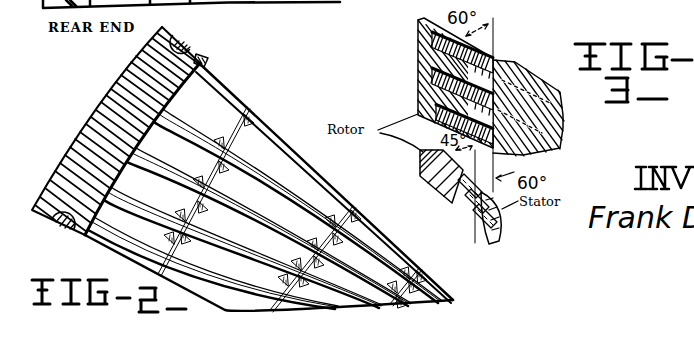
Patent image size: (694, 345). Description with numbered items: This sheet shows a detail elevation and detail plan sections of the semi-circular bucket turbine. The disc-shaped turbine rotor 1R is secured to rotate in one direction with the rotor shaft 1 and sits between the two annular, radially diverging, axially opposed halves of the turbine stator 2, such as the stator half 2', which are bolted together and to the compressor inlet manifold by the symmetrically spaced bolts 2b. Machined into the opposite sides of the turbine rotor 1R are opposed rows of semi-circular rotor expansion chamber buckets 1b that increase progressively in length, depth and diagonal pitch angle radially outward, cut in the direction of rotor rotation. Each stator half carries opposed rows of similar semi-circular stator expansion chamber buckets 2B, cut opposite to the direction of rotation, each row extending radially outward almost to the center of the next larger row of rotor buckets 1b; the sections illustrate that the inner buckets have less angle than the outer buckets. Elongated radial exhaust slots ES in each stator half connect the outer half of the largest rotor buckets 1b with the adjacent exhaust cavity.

In FIG. 2, the rotor shaft 1 is at (229, 22).
In FIG. 2, the turbine stator 2 is at (116, 131).
In FIG. 2, the bolts 2b is at (170, 46).
In FIG. 2, the radial exhaust slots ES is at (219, 91).
In FIG. 2, the stator expansion chamber buckets 2B is at (311, 158).
In FIG. 3, the stator expansion chamber buckets 2B is at (513, 72).
In FIG. 3, the rotor expansion chamber buckets 1b is at (430, 45).
In FIG. 3, the turbine rotor 1R is at (418, 83).
In FIG. 3, the stator half 2' is at (531, 152).